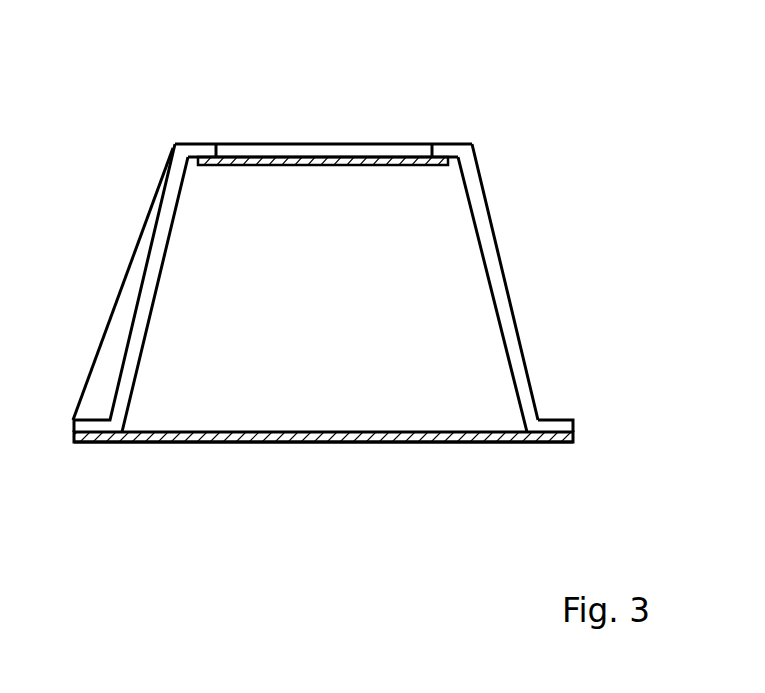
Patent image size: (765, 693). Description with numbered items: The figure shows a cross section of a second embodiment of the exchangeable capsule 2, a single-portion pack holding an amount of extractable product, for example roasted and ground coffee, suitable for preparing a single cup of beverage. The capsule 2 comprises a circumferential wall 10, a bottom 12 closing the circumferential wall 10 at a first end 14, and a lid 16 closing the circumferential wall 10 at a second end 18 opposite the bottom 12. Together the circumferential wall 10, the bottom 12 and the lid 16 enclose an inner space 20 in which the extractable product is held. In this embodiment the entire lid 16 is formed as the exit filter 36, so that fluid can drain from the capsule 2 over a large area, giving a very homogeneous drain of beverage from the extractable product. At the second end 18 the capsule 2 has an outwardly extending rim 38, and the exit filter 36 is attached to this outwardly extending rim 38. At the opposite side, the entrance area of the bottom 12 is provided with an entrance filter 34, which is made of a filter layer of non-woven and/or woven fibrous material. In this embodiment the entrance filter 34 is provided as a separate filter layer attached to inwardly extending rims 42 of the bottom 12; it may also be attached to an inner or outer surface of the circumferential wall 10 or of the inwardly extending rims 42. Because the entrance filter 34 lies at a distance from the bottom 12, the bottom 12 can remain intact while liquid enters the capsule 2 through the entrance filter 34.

The exchangeable capsule 2 is at (368, 293).
The circumferential wall 10 is at (503, 310).
The bottom 12 is at (377, 136).
The first end 14 is at (468, 163).
The lid 16 is at (522, 443).
The second end 18 is at (527, 404).
The inner space 20 is at (214, 247).
The entrance filter 34 is at (318, 136).
The exit filter 36 is at (323, 450).
The outwardly extending rim 38 is at (563, 425).
The inwardly extending rims 42 is at (443, 152).